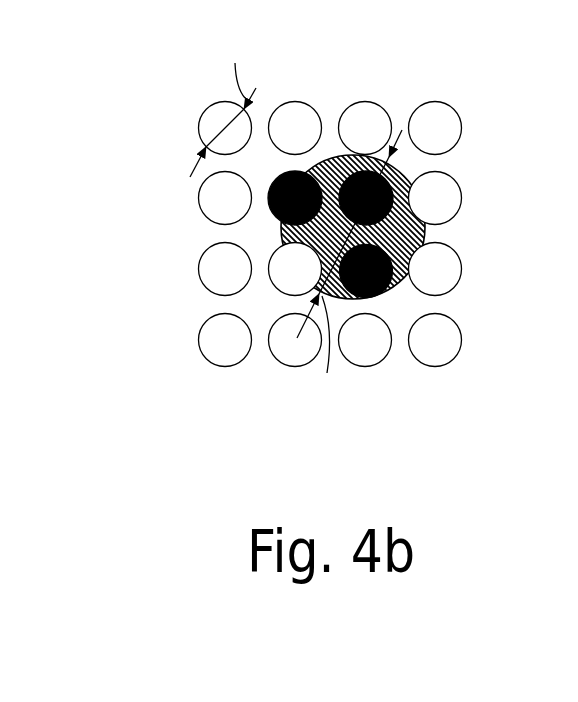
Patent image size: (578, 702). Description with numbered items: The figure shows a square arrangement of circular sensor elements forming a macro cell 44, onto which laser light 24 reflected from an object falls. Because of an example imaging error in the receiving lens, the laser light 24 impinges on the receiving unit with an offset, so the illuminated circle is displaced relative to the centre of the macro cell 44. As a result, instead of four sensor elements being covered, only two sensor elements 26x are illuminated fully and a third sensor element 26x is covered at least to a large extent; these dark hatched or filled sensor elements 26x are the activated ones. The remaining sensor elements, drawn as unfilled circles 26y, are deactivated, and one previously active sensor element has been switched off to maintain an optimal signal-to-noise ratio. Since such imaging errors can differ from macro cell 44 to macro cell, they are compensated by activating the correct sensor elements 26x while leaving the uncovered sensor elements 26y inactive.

The laser light 24 is at (330, 157).
The activated sensor elements 26x is at (373, 226).
The deactivated sensor elements 26y is at (347, 120).
The macro cell 44 is at (156, 357).